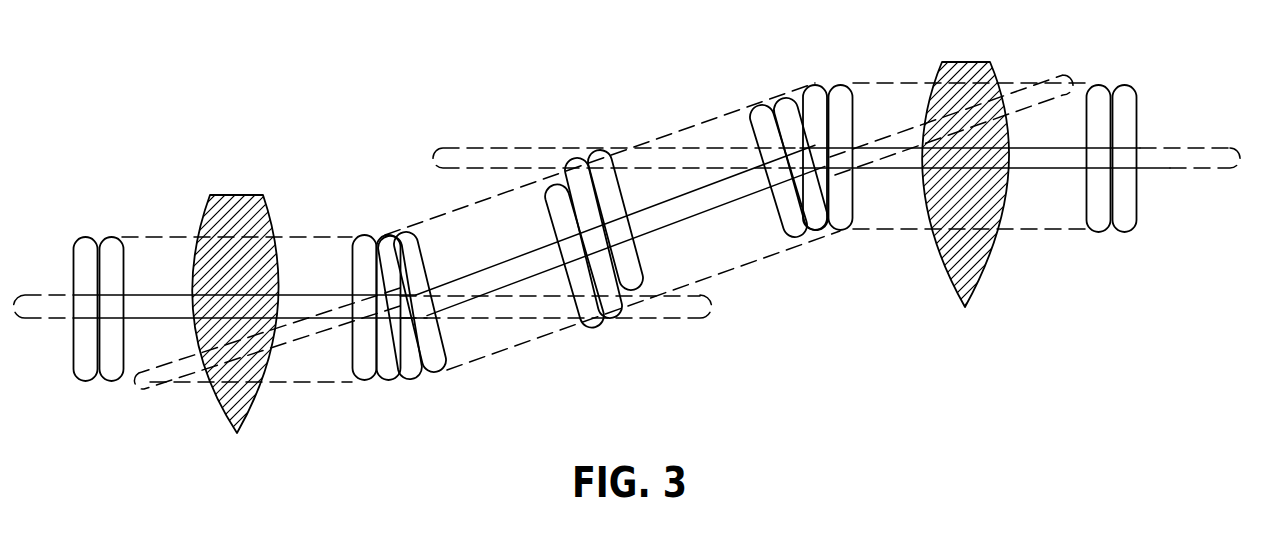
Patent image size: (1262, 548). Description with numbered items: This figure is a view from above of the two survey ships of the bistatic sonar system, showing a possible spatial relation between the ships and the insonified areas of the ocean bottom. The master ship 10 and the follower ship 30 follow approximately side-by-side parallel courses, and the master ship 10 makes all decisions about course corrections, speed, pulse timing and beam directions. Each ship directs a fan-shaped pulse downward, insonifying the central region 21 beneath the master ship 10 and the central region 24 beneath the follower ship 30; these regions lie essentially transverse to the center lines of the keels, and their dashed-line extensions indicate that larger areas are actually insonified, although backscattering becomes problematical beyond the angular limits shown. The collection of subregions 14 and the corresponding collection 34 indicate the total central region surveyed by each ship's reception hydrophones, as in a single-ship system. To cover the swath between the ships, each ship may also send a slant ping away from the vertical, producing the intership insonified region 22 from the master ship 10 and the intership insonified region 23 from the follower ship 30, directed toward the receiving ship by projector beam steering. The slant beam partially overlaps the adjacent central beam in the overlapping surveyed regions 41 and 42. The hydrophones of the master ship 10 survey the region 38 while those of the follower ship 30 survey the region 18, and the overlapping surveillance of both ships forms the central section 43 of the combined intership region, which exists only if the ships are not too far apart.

The master survey ship 10 is at (267, 203).
The total central region surveyed by ship 10 hydrophones 14 is at (343, 382).
The region surveyed by ship 30 hydrophones 18 is at (517, 350).
The central insonified region of ship 10 21 is at (142, 301).
The intership insonified region of ship 10 22 is at (488, 281).
The intership insonified region of ship 30 23 is at (665, 200).
The central insonified region of ship 30 24 is at (900, 164).
The follower survey ship 30 is at (988, 62).
The total central region surveyed by ship 30 hydrophones 34 is at (1047, 232).
The region surveyed by ship 10 hydrophones 38 is at (684, 127).
The overlapping surveyed region of ship 10 41 is at (382, 238).
The overlapping surveyed region of ship 30 42 is at (822, 216).
The central section of combined intership region 43 is at (575, 185).